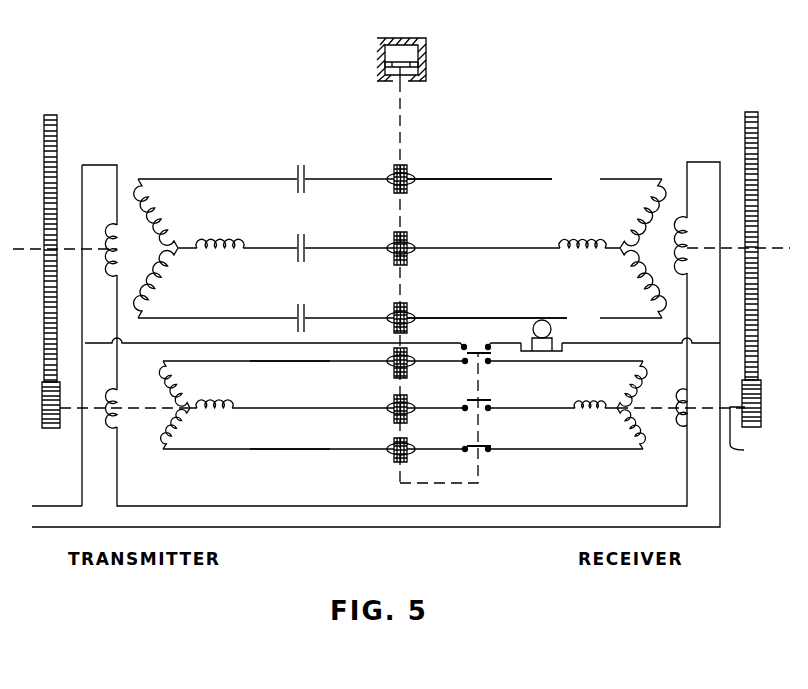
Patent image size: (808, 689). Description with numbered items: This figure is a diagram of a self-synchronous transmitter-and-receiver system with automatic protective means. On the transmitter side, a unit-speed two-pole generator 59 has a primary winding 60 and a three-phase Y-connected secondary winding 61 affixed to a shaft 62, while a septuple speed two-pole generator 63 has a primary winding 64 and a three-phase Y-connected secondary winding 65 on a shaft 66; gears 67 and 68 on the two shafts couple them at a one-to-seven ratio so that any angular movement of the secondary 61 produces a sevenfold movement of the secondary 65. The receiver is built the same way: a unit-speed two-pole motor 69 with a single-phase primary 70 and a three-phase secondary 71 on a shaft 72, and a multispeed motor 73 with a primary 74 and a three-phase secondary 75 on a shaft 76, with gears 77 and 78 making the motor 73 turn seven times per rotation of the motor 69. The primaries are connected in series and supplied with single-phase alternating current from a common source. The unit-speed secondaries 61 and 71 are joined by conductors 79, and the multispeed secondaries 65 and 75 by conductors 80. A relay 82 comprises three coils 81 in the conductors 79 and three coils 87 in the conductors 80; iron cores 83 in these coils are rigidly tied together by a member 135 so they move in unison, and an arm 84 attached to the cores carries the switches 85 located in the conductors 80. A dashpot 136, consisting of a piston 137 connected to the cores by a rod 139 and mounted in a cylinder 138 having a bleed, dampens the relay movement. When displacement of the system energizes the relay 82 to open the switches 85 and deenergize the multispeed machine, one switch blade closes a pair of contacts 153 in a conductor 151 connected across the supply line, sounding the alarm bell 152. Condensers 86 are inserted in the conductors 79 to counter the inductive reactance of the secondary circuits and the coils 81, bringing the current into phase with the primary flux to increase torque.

The unit-speed two-pole generator 59 is at (170, 165).
The primary winding 60 is at (120, 257).
The three-phase Y-connected secondary winding 61 is at (215, 248).
The shaft 62 is at (44, 251).
The septuple speed two-pole generator 63 is at (172, 465).
The primary winding 64 is at (123, 416).
The three-phase Y-connected secondary winding 65 is at (196, 405).
The shaft 66 is at (80, 410).
The gear 67 is at (45, 328).
The gear 68 is at (43, 414).
The unit-speed two-pole motor 69 is at (633, 155).
The single-phase primary 70 is at (682, 234).
The three-phase secondary 71 is at (610, 248).
The shaft 72 is at (762, 248).
The multispeed motor 73 is at (637, 462).
The primary 74 is at (683, 411).
The three-phase secondary 75 is at (610, 405).
The shaft 76 is at (695, 436).
The gear 77 is at (772, 331).
The gear 78 is at (772, 409).
The conductors 79 is at (567, 318).
The conductors 80 is at (320, 450).
The coils 81 is at (407, 300).
The relay 82 is at (410, 148).
The iron cores 83 is at (396, 312).
The arm 84 is at (477, 413).
The switches 85 is at (480, 443).
The condensers 86 is at (303, 313).
The coils 87 is at (393, 447).
The member 135 is at (402, 393).
The dashpot 136 is at (450, 47).
The piston 137 is at (385, 64).
The cylinder 138 is at (377, 48).
The rod 139 is at (398, 108).
The conductor 151 is at (221, 343).
The bell 152 is at (553, 336).
The contacts 153 is at (487, 344).